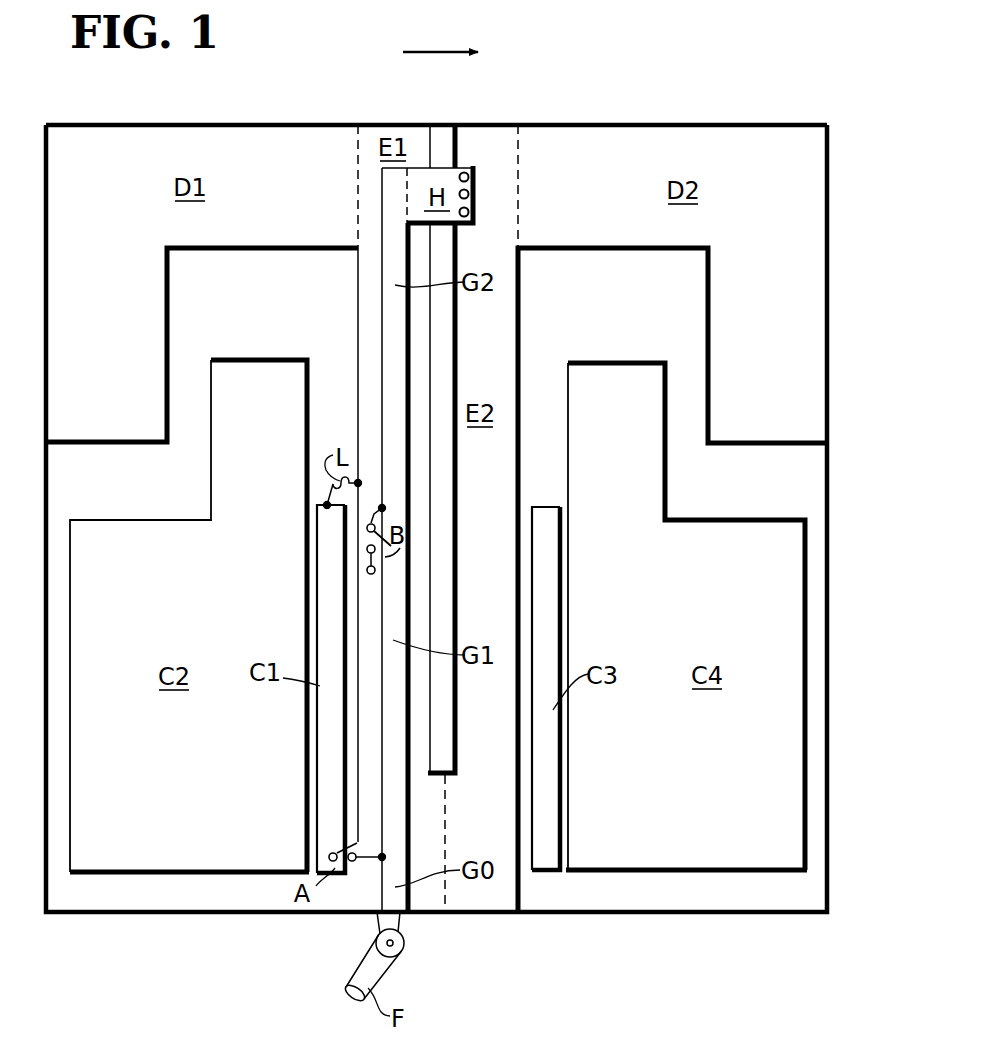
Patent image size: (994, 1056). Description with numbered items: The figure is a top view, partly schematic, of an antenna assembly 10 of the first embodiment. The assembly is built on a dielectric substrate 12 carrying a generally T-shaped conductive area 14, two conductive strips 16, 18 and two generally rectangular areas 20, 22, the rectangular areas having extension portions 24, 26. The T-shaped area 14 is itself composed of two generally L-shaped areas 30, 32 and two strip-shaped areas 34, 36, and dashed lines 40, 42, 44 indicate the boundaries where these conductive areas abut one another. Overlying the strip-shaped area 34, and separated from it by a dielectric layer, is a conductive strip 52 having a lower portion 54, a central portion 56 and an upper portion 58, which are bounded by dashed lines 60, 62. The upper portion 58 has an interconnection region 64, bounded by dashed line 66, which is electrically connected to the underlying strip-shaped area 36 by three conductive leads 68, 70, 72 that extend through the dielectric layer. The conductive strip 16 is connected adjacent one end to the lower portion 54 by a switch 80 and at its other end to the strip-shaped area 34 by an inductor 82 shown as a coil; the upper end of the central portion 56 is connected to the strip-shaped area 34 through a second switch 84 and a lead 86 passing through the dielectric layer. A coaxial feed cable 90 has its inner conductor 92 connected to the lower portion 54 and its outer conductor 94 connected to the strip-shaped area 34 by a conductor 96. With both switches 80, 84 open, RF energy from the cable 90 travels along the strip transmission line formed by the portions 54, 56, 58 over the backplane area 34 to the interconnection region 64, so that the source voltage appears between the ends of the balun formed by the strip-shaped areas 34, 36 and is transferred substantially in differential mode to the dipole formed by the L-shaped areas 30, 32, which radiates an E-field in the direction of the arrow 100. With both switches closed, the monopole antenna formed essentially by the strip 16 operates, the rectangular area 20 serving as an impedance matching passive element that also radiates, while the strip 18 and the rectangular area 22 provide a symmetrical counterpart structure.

The antenna assembly 10 is at (100, 936).
The dielectric substrate 12 is at (829, 481).
The T-shaped conductive area 14 is at (616, 145).
The conductive strip 16 is at (323, 745).
The conductive strip 18 is at (553, 761).
The rectangular conductive area 20 is at (178, 860).
The rectangular conductive area 22 is at (705, 858).
The extension portion 24 is at (211, 478).
The extension portion 26 is at (650, 450).
The L-shaped area 30 is at (203, 131).
The L-shaped area 32 is at (722, 134).
The strip-shaped area 34 is at (363, 403).
The strip-shaped area 36 is at (505, 309).
The dashed line 40 is at (358, 122).
The dashed line 42 is at (519, 124).
The dashed line 44 is at (447, 906).
The conductive strip 52 is at (356, 427).
The lower portion 54 is at (397, 877).
The central portion 56 is at (395, 628).
The upper portion 58 is at (397, 277).
The dashed line 60 is at (398, 850).
The dashed line 62 is at (385, 490).
The interconnection region 64 is at (425, 181).
The dashed line 66 is at (407, 186).
The conductive lead 68 is at (470, 177).
The conductive lead 70 is at (470, 194).
The conductive lead 72 is at (470, 212).
The switch 80 is at (329, 837).
The inductor 82 is at (335, 484).
The switch 84 is at (357, 538).
The lead 86 is at (380, 556).
The coaxial feed cable 90 is at (330, 988).
The inner conductor 92 is at (397, 924).
The outer conductor 94 is at (392, 970).
The conductor 96 is at (375, 922).
The arrow 100 is at (406, 55).